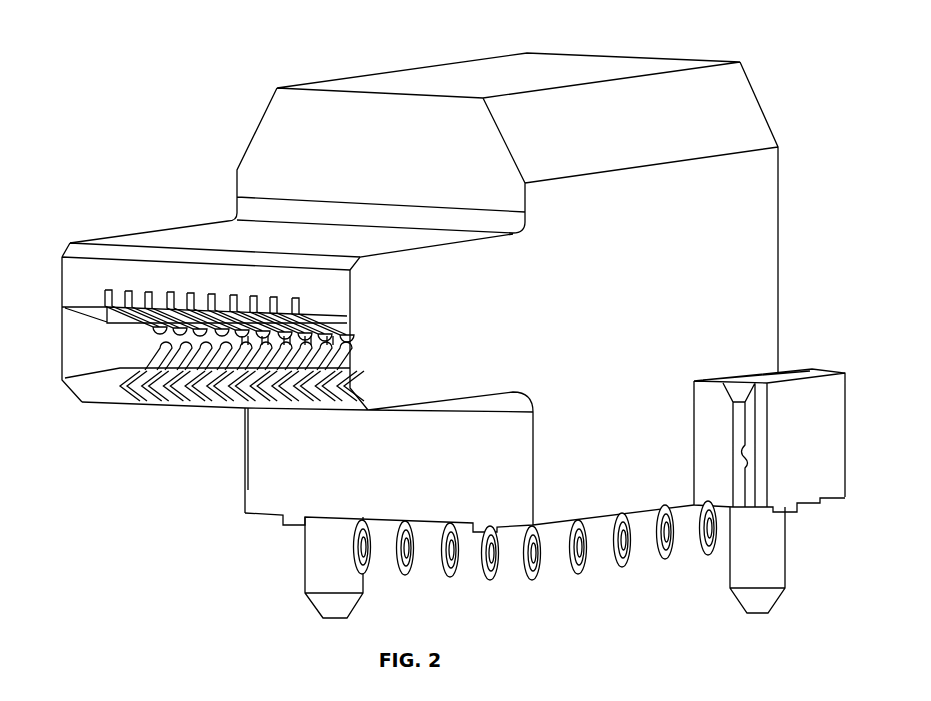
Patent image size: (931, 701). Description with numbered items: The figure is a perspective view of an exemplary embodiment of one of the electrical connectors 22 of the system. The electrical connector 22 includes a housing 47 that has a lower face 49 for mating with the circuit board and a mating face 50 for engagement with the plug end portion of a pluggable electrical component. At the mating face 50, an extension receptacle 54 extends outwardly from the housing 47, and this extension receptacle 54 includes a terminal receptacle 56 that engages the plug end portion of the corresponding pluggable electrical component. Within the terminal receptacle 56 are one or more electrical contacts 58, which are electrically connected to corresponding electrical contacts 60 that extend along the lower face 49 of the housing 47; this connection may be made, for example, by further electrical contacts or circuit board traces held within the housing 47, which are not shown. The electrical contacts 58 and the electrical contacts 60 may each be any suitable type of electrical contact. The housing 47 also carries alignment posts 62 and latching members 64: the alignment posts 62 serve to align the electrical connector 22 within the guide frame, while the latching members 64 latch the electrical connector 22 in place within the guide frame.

The electrical connector 22 is at (135, 53).
The housing 47 is at (767, 192).
The lower face 49 is at (560, 537).
The mating face 50 is at (135, 416).
The extension receptacle 54 is at (338, 233).
The terminal receptacle 56 is at (157, 360).
The electrical contacts 58 is at (150, 295).
The electrical contacts 60 is at (450, 577).
The alignment posts 62 is at (318, 553).
The latching members 64 is at (243, 443).